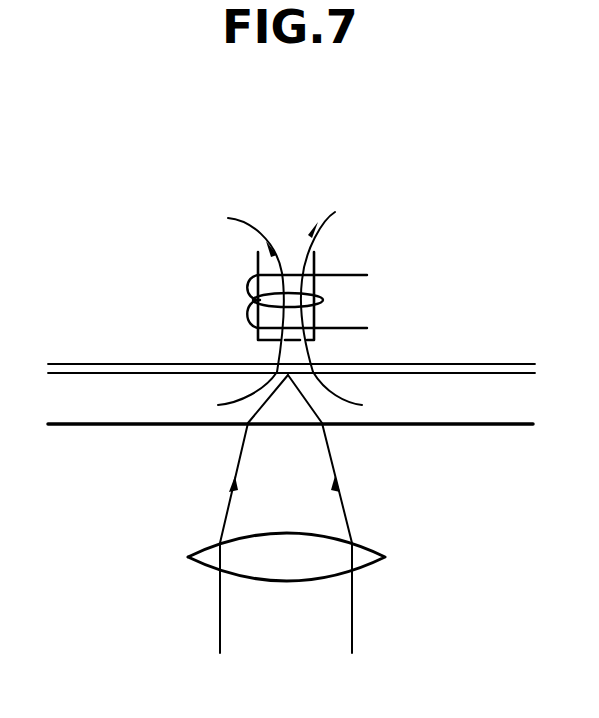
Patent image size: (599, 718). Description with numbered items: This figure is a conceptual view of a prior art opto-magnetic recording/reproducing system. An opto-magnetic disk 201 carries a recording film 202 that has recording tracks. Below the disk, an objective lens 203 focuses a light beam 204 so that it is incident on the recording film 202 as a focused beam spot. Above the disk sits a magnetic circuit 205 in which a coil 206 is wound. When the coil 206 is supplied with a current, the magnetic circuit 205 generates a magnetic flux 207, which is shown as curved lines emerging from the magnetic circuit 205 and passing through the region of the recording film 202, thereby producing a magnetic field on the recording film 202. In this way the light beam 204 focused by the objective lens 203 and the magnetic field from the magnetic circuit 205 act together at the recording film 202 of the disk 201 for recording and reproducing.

The opto-magnetic disk 201 is at (478, 410).
The recording film 202 is at (112, 373).
The objective lens 203 is at (357, 542).
The light beam 204 is at (352, 630).
The magnetic circuit 205 is at (315, 283).
The coil 206 is at (350, 268).
The magnetic flux 207 is at (333, 213).